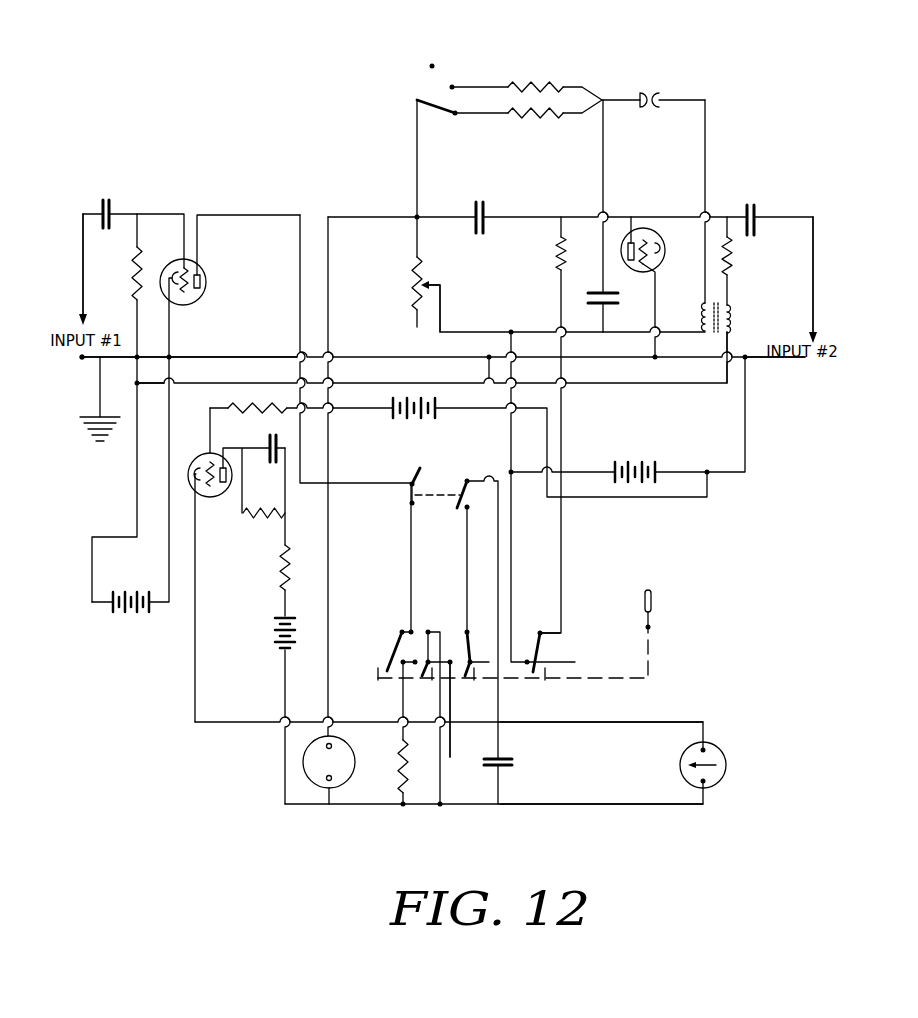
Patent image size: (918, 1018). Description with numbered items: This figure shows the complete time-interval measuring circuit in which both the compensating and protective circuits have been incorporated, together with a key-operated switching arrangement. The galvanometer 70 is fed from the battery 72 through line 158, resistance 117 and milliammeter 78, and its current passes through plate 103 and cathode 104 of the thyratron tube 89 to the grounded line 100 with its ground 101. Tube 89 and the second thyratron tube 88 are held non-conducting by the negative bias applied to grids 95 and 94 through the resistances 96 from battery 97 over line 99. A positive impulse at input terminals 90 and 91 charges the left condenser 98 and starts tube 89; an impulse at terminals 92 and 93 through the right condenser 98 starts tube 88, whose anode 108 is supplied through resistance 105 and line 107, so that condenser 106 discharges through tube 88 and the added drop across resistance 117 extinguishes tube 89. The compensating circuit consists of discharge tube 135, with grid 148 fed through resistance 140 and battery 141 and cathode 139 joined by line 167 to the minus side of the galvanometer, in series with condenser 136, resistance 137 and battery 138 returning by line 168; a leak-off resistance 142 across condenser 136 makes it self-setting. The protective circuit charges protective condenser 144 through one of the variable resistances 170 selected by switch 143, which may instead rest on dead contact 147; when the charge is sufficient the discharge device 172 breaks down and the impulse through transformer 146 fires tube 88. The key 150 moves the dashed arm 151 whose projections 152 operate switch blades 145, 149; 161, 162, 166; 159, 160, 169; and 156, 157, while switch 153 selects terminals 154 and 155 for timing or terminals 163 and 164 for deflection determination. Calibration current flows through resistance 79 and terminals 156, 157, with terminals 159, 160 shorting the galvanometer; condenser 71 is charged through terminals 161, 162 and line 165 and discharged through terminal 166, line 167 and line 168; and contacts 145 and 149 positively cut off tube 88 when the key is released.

The galvanometer 70 is at (728, 764).
The condenser 71 is at (513, 762).
The battery 72 is at (629, 462).
The milliammeter 78 is at (319, 788).
The resistance 79 is at (408, 790).
The electronic tube 88 is at (638, 229).
The electronic tube 89 is at (201, 268).
The terminal 90 is at (81, 323).
The terminal 91 is at (81, 360).
The terminal 92 is at (816, 338).
The terminal 93 is at (803, 360).
The grid 94 is at (643, 266).
The grid 95 is at (192, 292).
The resistance 96 is at (130, 272).
The battery 97 is at (138, 614).
The condenser 98 is at (113, 201).
The line 99 is at (370, 383).
The line 100 is at (358, 357).
The ground 101 is at (95, 444).
The plate 103 is at (201, 283).
The cathode 104 is at (174, 280).
The resistance 105 is at (556, 251).
The condenser 106 is at (488, 207).
The line 107 is at (658, 250).
The anode 108 is at (627, 257).
The resistance 117 is at (412, 263).
The discharge tube 135 is at (228, 478).
The condenser 136 is at (268, 443).
The resistance 137 is at (278, 562).
The battery 138 is at (278, 650).
The cathode 139 is at (204, 460).
The resistance 140 is at (229, 406).
The battery 141 is at (420, 412).
The resistance 142 is at (268, 516).
The switch 143 is at (417, 98).
The protective condenser 144 is at (608, 304).
The switch contact 145 is at (530, 639).
The transformer 146 is at (732, 316).
The dead contact 147 is at (434, 64).
The grid 148 is at (213, 489).
The switch contact 149 is at (560, 662).
The key 150 is at (652, 610).
The arm 151 is at (612, 680).
The projections 152 is at (377, 679).
The switch 153 is at (442, 493).
The terminal 154 is at (413, 480).
The terminal 155 is at (410, 504).
The terminal 156 is at (400, 661).
The terminal 157 is at (400, 631).
The line 158 is at (441, 303).
The terminal 159 is at (428, 666).
The terminal 160 is at (428, 630).
The terminal 161 is at (470, 666).
The terminal 162 is at (469, 631).
The terminal 163 is at (467, 478).
The terminal 164 is at (465, 509).
The line 165 is at (488, 421).
The terminal 166 is at (455, 719).
The line 167 is at (645, 724).
The line 168 is at (573, 803).
The terminal 169 is at (415, 660).
The variable resistance 170 is at (540, 108).
The discharge device 172 is at (643, 92).